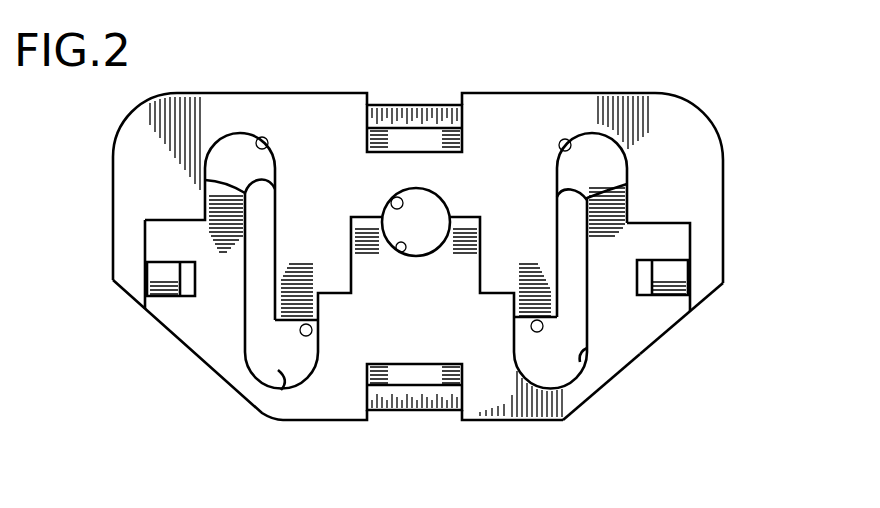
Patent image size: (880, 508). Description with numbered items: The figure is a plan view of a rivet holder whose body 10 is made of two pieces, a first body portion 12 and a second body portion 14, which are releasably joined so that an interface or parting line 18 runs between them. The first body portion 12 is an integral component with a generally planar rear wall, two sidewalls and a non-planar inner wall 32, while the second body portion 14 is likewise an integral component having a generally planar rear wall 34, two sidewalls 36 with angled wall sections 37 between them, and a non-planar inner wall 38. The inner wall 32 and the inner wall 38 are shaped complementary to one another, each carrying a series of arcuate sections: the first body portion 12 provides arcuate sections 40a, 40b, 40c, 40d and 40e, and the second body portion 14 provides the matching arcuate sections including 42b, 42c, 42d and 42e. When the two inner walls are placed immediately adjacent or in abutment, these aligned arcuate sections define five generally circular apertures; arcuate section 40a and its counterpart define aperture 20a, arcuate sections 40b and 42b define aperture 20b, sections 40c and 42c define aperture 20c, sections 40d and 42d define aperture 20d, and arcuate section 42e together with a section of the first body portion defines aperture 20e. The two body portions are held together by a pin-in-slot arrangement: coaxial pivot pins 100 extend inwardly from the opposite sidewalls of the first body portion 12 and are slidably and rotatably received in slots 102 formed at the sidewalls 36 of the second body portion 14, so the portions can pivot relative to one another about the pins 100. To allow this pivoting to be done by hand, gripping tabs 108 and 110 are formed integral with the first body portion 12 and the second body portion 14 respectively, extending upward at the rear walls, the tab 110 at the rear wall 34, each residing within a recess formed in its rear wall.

The body 10 is at (730, 116).
The first body portion 12 is at (638, 88).
The second body portion 14 is at (616, 396).
The parting line 18 is at (160, 220).
The circular aperture 20a is at (232, 146).
The circular aperture 20b is at (268, 384).
The circular aperture 20c is at (420, 220).
The circular aperture 20d is at (590, 140).
The circular aperture 20e is at (556, 366).
The inner wall 32 is at (163, 222).
The rear wall 34 is at (314, 424).
The sidewalls 36 is at (140, 228).
The angled wall sections 37 is at (692, 317).
The inner wall 38 is at (181, 214).
The arcuate section 40a is at (268, 143).
The arcuate section 40b is at (317, 331).
The arcuate section 40c is at (396, 202).
The arcuate section 40d is at (532, 318).
The arcuate section 40e is at (563, 144).
The arcuate section 42b is at (300, 372).
The arcuate section 42c is at (407, 253).
The arcuate section 42d is at (276, 189).
The arcuate section 42e is at (560, 196).
The pivot pins 100 is at (142, 310).
The slots 102 is at (207, 253).
The gripping tab 108 is at (409, 104).
The gripping tab 110 is at (407, 398).